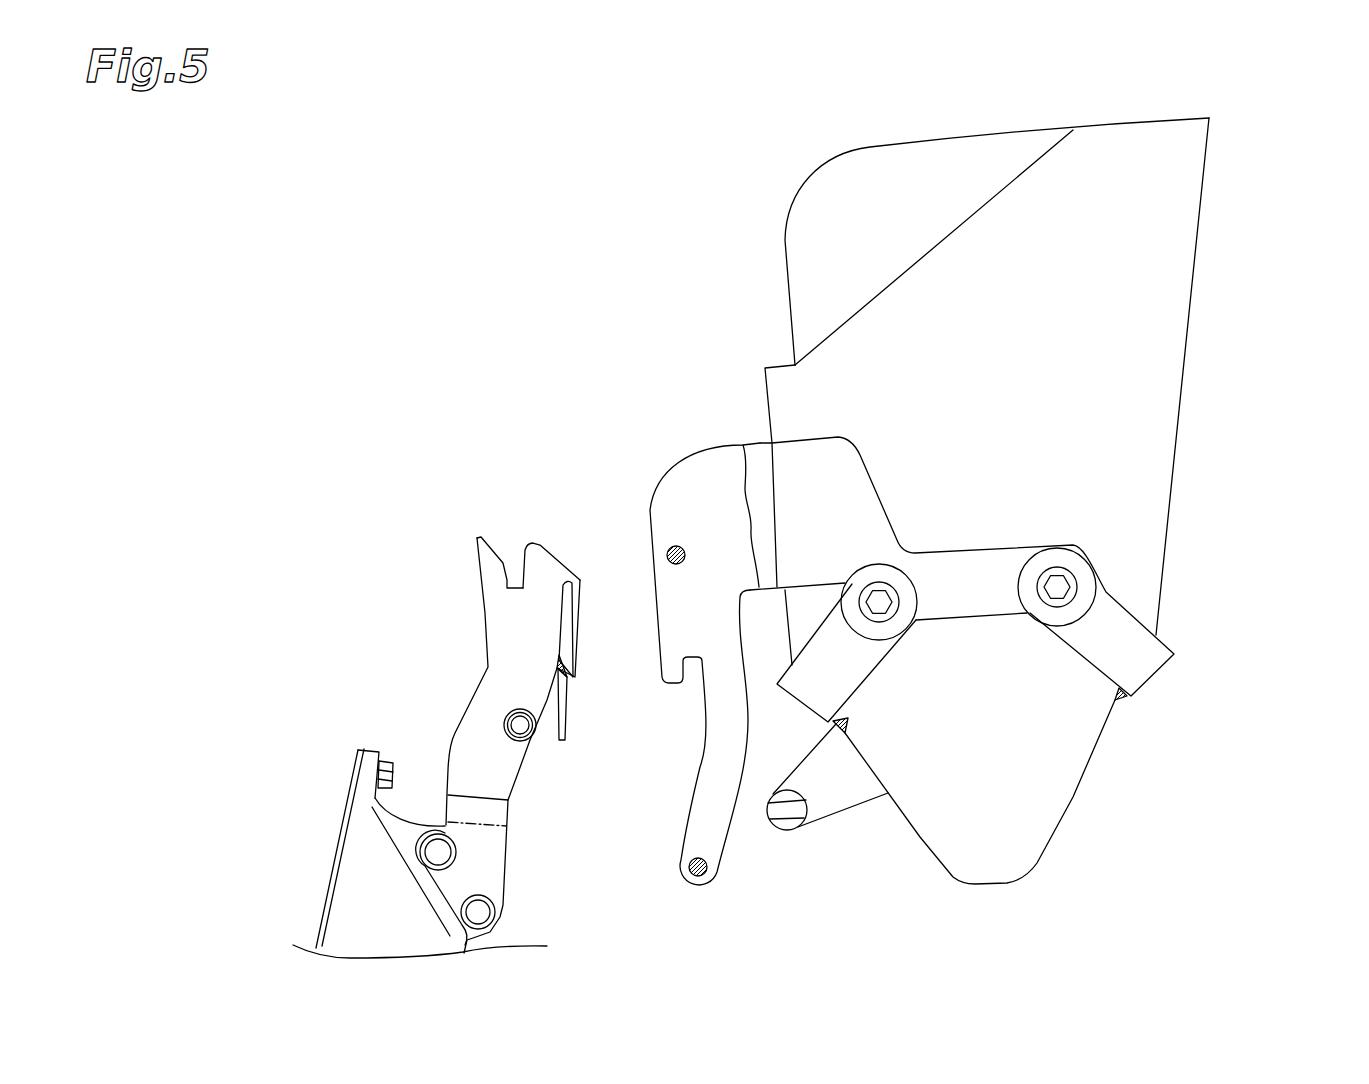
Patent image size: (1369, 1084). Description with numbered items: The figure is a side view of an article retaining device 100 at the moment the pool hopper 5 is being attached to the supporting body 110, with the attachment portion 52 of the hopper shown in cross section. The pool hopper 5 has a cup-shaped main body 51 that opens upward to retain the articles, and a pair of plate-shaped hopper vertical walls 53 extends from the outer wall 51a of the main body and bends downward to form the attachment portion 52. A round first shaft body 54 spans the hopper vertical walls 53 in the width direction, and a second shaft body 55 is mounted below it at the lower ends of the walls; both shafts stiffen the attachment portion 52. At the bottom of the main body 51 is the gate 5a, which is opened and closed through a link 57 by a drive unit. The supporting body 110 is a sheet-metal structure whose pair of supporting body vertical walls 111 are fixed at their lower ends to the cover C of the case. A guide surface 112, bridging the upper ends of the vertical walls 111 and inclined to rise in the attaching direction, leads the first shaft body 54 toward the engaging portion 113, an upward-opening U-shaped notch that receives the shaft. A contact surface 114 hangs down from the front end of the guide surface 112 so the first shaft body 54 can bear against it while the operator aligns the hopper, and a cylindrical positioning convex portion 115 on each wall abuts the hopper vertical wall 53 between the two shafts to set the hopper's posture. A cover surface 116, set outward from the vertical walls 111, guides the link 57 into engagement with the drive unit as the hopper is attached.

The article retaining device 100 is at (246, 211).
The supporting body 110 is at (433, 554).
The supporting body vertical walls 111 is at (472, 730).
The guide surface 112 is at (557, 553).
The engaging portion 113 is at (517, 577).
The contact surface 114 is at (577, 650).
The positioning convex portion 115 is at (505, 718).
The cover surface 116 is at (570, 725).
The cover C is at (354, 835).
The pool hopper 5 is at (1248, 132).
The main body 51 is at (1172, 222).
The outer wall 51a is at (766, 397).
The attachment portion 52 is at (710, 425).
The hopper vertical walls 53 is at (690, 477).
The first shaft body 54 is at (670, 545).
The second shaft body 55 is at (698, 880).
The link 57 is at (835, 790).
The gate 5a is at (918, 852).